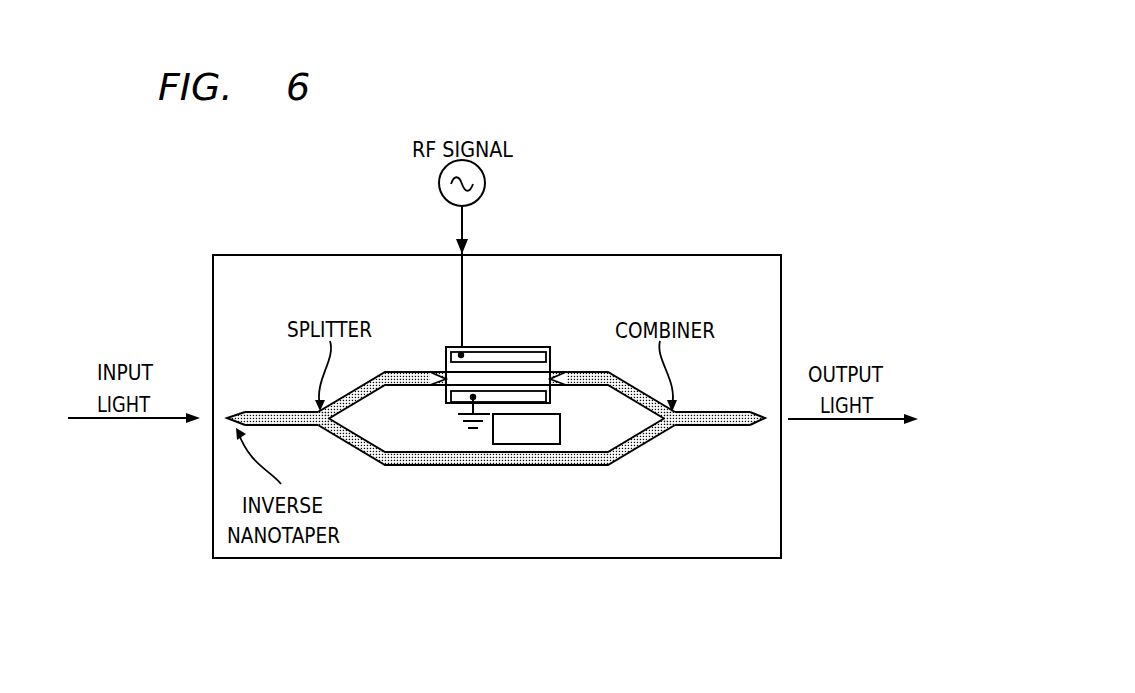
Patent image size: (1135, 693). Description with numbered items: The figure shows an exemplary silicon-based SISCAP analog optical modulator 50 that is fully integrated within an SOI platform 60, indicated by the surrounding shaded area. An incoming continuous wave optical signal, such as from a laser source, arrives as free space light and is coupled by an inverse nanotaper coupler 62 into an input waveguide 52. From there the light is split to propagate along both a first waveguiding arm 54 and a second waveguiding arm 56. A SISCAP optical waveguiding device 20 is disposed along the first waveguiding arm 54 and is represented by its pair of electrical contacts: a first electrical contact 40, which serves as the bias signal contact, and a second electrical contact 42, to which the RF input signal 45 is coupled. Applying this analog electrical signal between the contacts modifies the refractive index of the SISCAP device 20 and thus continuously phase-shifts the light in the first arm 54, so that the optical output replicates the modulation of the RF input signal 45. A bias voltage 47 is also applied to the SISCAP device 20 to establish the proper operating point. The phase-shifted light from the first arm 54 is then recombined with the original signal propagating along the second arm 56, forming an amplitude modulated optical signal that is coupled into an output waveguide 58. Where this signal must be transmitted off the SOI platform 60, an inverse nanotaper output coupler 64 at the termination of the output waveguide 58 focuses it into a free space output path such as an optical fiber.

The SISCAP optical waveguiding device 20 is at (480, 340).
The first electrical contact 40 is at (447, 396).
The second electrical contact 42 is at (524, 355).
The RF input signal 45 is at (486, 183).
The bias voltage 47 is at (561, 428).
The SISCAP analog optical modulator 50 is at (714, 224).
The input waveguide 52 is at (284, 411).
The first waveguiding arm 54 is at (420, 370).
The second waveguiding arm 56 is at (497, 466).
The output waveguide 58 is at (705, 427).
The SOI platform 60 is at (268, 262).
The inverse nanotaper coupler 62 is at (243, 410).
The inverse nanotaper output coupler 64 is at (757, 411).